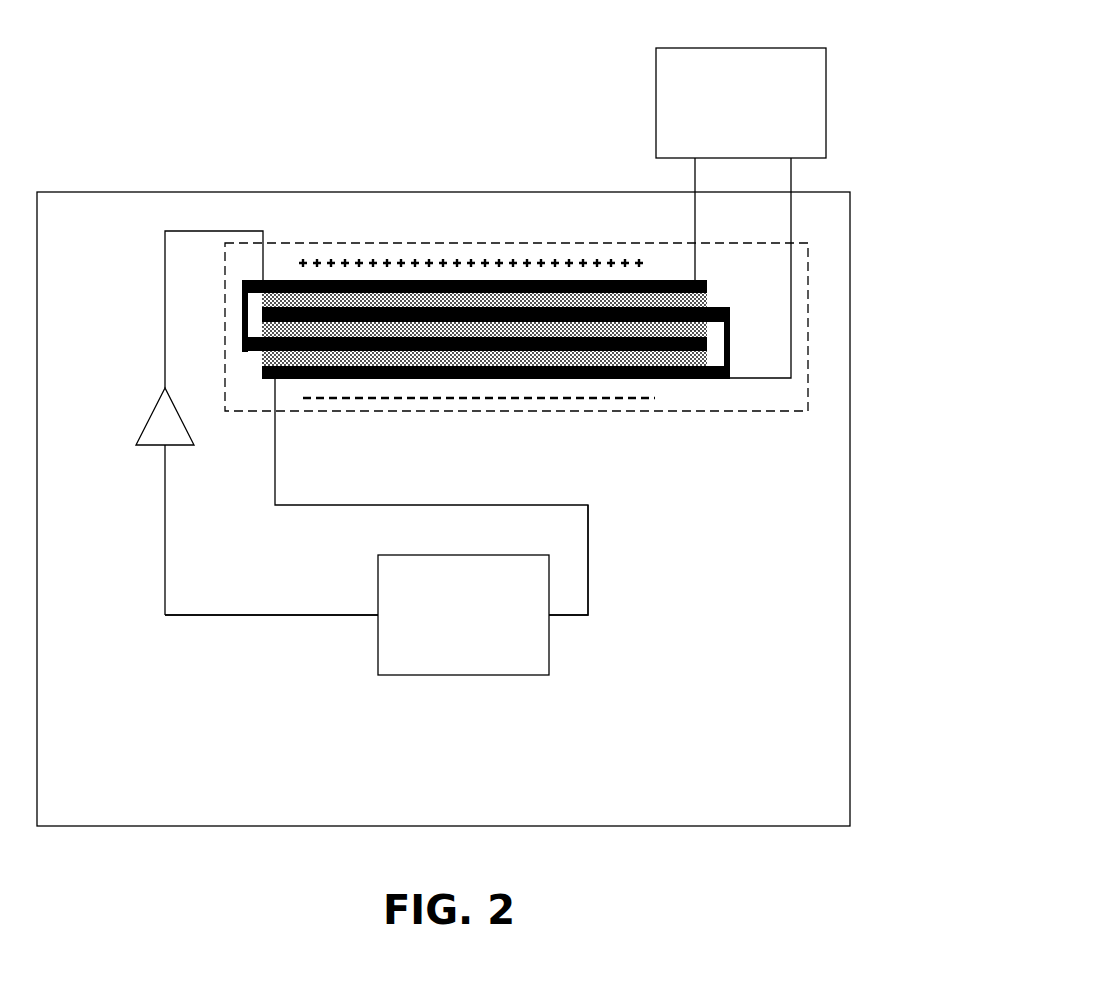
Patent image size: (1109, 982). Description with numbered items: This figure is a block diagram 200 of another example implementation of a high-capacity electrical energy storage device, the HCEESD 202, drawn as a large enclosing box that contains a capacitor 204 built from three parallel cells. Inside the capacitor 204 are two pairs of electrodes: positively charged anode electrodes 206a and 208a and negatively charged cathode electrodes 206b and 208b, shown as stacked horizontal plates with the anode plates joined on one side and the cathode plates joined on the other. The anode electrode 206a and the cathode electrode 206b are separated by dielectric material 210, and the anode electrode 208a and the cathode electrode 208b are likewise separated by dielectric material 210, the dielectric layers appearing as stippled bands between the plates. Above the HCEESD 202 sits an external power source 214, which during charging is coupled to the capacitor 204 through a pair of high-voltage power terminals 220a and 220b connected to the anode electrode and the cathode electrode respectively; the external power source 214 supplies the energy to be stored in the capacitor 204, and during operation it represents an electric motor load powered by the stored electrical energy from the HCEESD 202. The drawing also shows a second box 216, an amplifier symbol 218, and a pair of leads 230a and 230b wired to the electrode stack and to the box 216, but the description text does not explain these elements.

The block diagram 200 is at (119, 120).
The HCEESD 202 is at (826, 799).
The capacitor 204 is at (622, 413).
The anode electrode 206a is at (270, 280).
The cathode electrode 206b is at (250, 351).
The anode electrode 208a is at (713, 300).
The cathode electrode 208b is at (712, 368).
The dielectric material 210 is at (477, 330).
The external power source 214 is at (818, 145).
The voltage source / bias supply 216 is at (537, 669).
The amplifier 218 is at (155, 447).
The high-voltage power terminal 220a is at (695, 200).
The high-voltage power terminal 220b is at (792, 222).
The positive lead of bias supply 230a is at (288, 615).
The negative lead of bias supply 230b is at (588, 558).